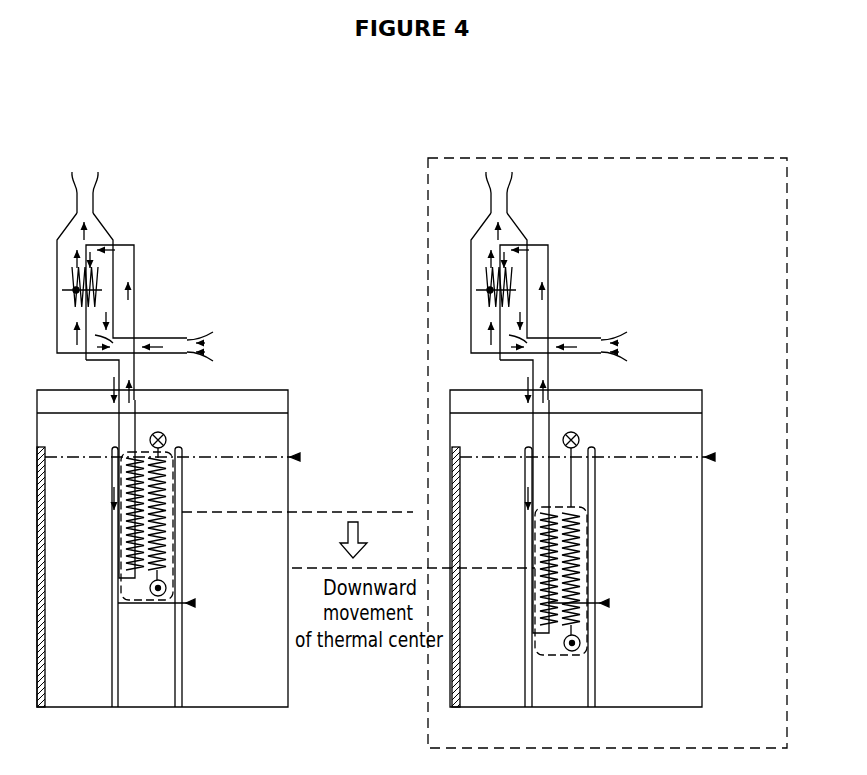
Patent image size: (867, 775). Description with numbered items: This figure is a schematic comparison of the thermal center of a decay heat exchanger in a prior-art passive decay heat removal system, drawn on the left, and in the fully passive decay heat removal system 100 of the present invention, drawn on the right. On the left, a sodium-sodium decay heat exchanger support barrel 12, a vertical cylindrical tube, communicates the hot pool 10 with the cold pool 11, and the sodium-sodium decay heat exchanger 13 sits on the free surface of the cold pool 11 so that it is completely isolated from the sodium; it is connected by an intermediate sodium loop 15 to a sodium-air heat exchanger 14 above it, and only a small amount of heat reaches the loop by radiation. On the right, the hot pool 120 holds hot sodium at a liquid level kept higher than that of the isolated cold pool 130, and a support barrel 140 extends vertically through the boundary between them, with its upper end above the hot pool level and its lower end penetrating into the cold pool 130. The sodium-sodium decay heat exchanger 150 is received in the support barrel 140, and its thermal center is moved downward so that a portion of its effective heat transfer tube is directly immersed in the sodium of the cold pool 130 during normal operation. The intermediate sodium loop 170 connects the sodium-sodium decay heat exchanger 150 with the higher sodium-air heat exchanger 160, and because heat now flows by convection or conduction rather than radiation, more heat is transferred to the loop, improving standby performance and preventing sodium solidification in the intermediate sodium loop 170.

The hot pool 10 is at (283, 690).
The cold pool 11 is at (165, 700).
The sodium-sodium decay heat exchanger (DHX) support barrel 12 is at (182, 542).
The sodium-sodium decay heat exchanger 13 is at (182, 450).
The sodium-air heat exchanger 14 is at (102, 223).
The intermediate sodium loop 15 is at (133, 303).
The fully passive decay heat removal system 100 is at (736, 148).
The hot pool 120 is at (692, 507).
The cold pool 130 is at (570, 698).
The support barrel 140 is at (593, 543).
The sodium-sodium decay heat exchanger 150 is at (583, 507).
The sodium-air heat exchanger 160 is at (517, 223).
The intermediate sodium loop 170 is at (547, 303).